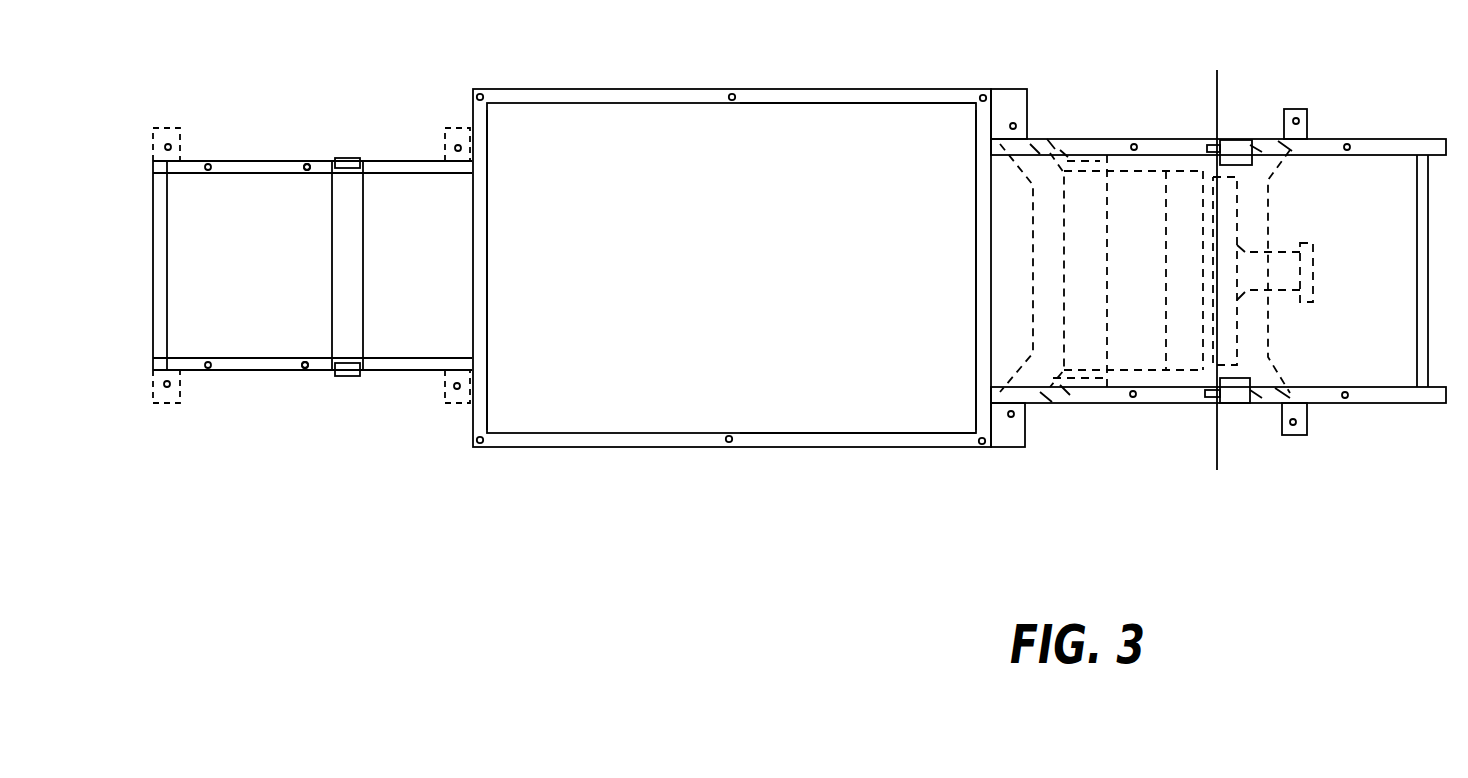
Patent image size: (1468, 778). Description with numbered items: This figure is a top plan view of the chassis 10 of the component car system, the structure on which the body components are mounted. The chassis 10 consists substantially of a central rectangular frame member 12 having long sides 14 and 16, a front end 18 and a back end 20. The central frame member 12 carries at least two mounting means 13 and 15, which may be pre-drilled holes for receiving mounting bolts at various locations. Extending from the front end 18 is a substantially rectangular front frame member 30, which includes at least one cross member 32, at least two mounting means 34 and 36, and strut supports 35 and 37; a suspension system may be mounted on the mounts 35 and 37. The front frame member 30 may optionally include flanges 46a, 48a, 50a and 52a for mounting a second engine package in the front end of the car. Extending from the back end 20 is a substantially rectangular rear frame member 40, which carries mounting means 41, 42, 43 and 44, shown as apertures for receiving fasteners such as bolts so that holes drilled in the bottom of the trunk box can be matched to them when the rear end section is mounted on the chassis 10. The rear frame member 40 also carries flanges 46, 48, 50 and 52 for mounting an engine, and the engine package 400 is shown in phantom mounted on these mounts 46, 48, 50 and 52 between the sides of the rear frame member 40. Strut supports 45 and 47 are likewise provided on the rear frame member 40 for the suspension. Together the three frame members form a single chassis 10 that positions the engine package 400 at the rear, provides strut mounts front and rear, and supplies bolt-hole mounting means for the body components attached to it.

The chassis 10 is at (718, 43).
The central rectangular frame member 12 is at (782, 447).
The mounting means 13 is at (732, 103).
The long side 14 is at (876, 103).
The mounting means 15 is at (729, 432).
The long side 16 is at (888, 433).
The front end 18 is at (487, 265).
The back end 20 is at (976, 270).
The front frame member 30 is at (233, 161).
The cross member 32 is at (360, 268).
The mounting means 34 is at (310, 173).
The strut support 35 is at (345, 158).
The mounting means 36 is at (305, 372).
The strut support 37 is at (347, 378).
The rear frame member 40 is at (1182, 139).
The mounting means 41 is at (1133, 403).
The mounting means 42 is at (1347, 140).
The mounting means 43 is at (1134, 140).
The mounting means 44 is at (1347, 403).
The strut support 45 is at (1238, 403).
The flange 46 is at (1305, 109).
The strut support 47 is at (1238, 140).
The flange 48 is at (1293, 435).
The flange 50 is at (1025, 447).
The flange 52 is at (1028, 95).
The flange 46a is at (447, 128).
The flange 48a is at (450, 403).
The flange 50a is at (160, 403).
The flange 52a is at (172, 128).
The engine package 400 is at (1085, 345).